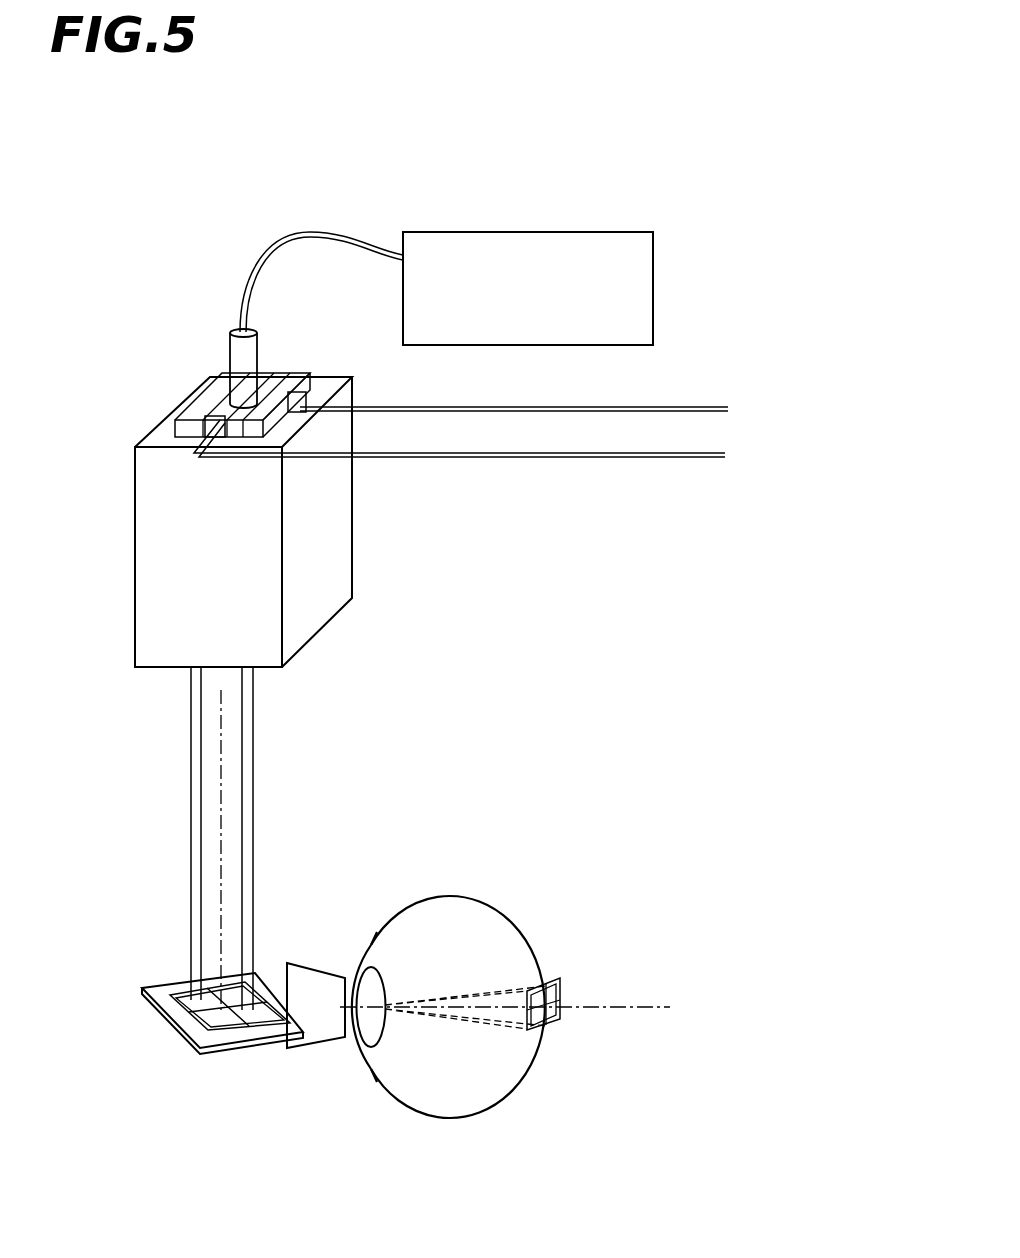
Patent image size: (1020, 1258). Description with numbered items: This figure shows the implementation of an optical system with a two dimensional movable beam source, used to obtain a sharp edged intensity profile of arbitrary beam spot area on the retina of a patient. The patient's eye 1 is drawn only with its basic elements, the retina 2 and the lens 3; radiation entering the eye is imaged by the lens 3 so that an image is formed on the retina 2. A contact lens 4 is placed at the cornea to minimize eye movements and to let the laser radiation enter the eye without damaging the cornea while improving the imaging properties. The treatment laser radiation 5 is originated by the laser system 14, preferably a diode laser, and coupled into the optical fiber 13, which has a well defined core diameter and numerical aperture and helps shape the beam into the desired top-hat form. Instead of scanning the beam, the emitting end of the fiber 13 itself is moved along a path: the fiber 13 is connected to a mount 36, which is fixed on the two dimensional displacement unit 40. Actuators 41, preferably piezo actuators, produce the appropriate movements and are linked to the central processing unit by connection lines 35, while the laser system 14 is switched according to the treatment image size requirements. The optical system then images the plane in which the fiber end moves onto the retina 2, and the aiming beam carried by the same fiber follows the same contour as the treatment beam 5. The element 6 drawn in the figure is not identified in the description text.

The patient's eye 1 is at (508, 938).
The retina 2 is at (560, 1019).
The lens 3 is at (372, 947).
The contact lens 4 is at (333, 1050).
The treatment laser radiation 5 is at (191, 818).
The target plate 6 is at (185, 1040).
The optical fiber 13 is at (258, 250).
The laser system 14 is at (653, 285).
The connection lines 35 is at (728, 409).
The mount 36 is at (232, 342).
The two dimensional displacement unit 40 is at (212, 390).
The actuators 41 is at (205, 418).